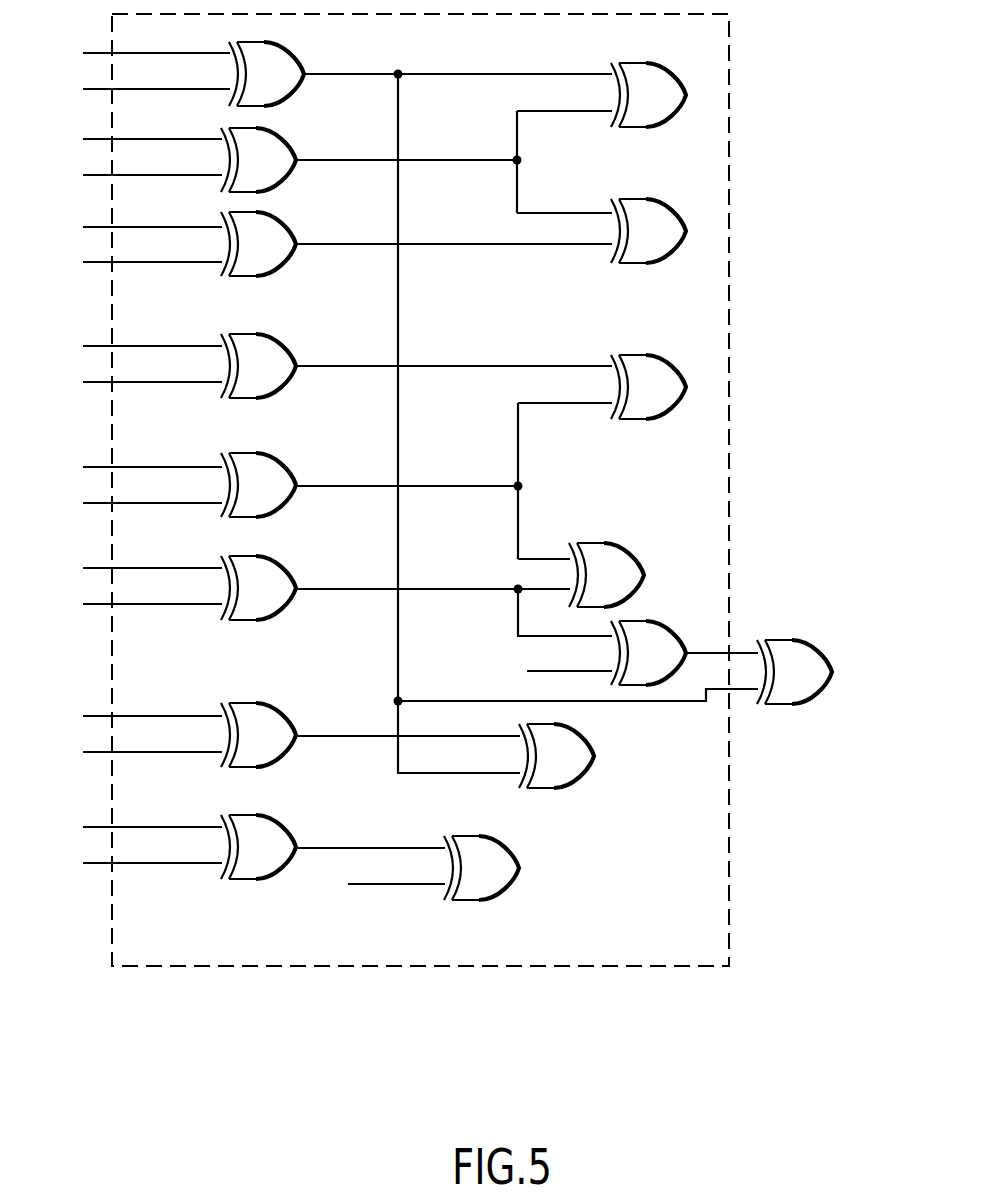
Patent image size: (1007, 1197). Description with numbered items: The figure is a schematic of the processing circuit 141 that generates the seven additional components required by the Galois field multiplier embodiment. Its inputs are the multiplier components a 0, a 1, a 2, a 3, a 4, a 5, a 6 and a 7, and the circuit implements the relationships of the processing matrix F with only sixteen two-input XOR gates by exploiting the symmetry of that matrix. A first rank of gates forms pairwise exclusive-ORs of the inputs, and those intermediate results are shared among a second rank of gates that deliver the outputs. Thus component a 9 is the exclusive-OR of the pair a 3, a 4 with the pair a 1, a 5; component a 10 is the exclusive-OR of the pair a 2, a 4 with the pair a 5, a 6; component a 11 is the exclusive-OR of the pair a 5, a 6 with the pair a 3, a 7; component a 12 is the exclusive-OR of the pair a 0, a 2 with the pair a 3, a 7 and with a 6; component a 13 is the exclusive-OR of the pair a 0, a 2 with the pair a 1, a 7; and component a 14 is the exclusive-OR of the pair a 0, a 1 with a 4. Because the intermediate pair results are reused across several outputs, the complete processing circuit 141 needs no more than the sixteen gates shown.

The processing circuit 141 is at (731, 293).
The component a0 0 is at (137, 52).
The component a1 1 is at (686, 94).
The component a2 2 is at (137, 217).
The component a3 3 is at (133, 353).
The component a4 4 is at (244, 529).
The component a5 5 is at (133, 364).
The component a6 6 is at (328, 585).
The component a7 7 is at (133, 603).
The component a9 9 is at (686, 232).
The component a10 10 is at (686, 387).
The component a11 11 is at (644, 577).
The component a12 12 is at (832, 672).
The component a13 13 is at (594, 757).
The component a14 14 is at (519, 869).